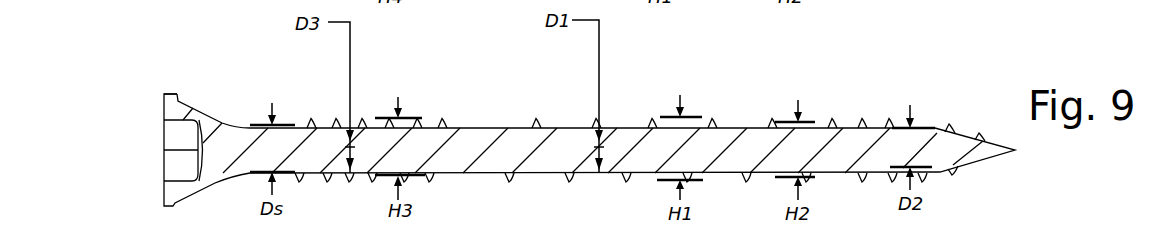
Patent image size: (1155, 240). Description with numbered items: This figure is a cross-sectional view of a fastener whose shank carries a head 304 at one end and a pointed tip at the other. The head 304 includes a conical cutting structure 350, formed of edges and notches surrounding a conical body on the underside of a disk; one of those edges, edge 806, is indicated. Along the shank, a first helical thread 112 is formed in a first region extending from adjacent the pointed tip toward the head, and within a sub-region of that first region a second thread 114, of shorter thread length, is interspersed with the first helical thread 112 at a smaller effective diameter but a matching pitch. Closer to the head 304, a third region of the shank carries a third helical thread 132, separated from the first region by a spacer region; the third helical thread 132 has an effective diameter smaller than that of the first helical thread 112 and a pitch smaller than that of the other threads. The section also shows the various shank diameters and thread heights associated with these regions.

The head 304 is at (160, 117).
The cutting structure 350 is at (198, 90).
The edge 806 is at (203, 0).
The third helical thread 132 is at (360, 125).
The first helical thread 112 is at (722, 120).
The second thread 114 is at (887, 120).